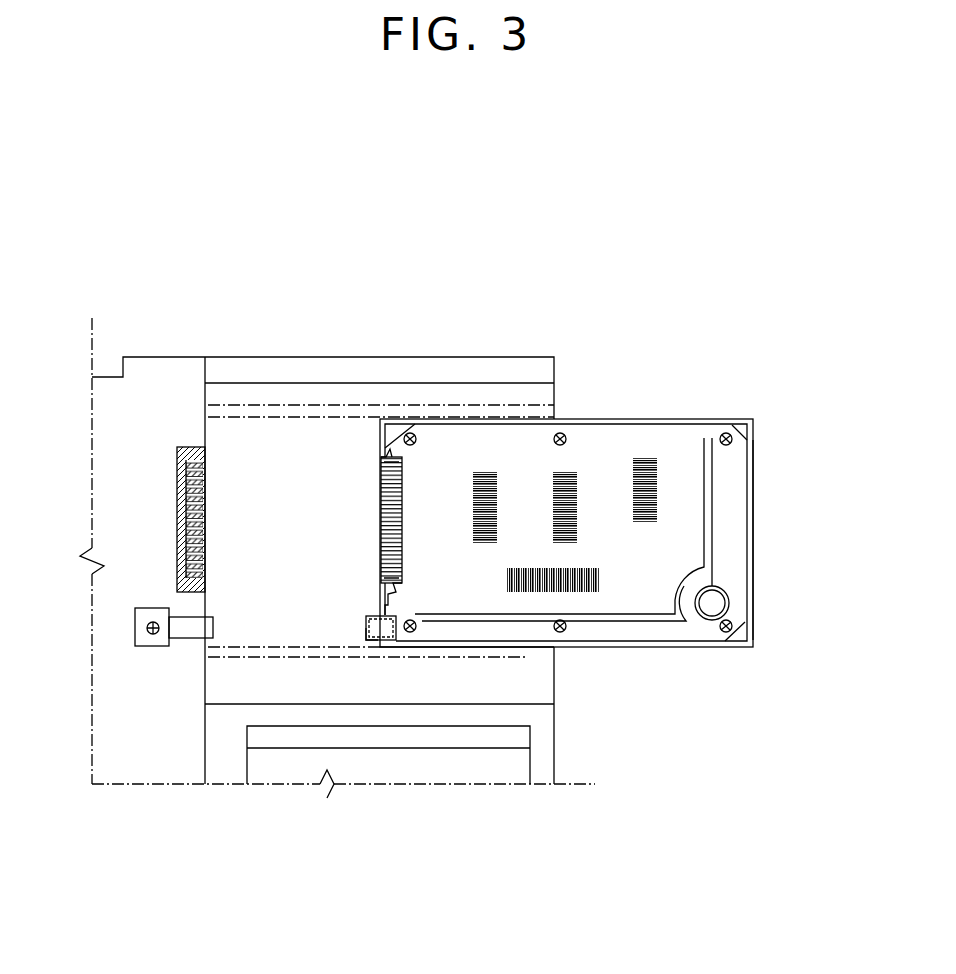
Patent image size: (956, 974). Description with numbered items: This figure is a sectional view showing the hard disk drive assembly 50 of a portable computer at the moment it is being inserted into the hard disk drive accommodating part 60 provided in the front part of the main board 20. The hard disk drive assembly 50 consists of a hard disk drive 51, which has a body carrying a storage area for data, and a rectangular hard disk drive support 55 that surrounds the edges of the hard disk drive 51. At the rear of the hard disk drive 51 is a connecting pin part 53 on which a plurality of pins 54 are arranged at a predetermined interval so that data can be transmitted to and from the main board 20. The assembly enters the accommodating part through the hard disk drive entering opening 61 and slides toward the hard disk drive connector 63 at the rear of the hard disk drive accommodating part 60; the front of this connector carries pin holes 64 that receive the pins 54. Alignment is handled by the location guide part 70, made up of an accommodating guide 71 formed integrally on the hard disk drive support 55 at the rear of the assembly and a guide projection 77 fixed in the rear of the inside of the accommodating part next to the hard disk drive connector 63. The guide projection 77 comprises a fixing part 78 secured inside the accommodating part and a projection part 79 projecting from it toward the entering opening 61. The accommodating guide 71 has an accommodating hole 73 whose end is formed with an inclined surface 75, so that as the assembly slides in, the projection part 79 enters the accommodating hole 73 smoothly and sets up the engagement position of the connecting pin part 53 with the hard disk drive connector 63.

The main board 20 is at (166, 366).
The hard disk drive accommodating part 60 is at (288, 440).
The hard disk drive entering opening 61 is at (556, 648).
The hard disk drive connector 63 is at (159, 519).
The pin holes 64 is at (203, 458).
The hard disk drive assembly 50 is at (593, 533).
The hard disk drive 51 is at (740, 532).
The hard disk drive support 55 is at (753, 493).
The connecting pin part 53 is at (370, 491).
The pins 54 is at (398, 519).
The location guide part 70 is at (297, 757).
The accommodating guide 71 is at (401, 740).
The accommodating hole 73 is at (378, 630).
The inclined surface 75 is at (368, 630).
The guide projection 77 is at (171, 736).
The fixing part 78 is at (146, 644).
The projection part 79 is at (185, 627).